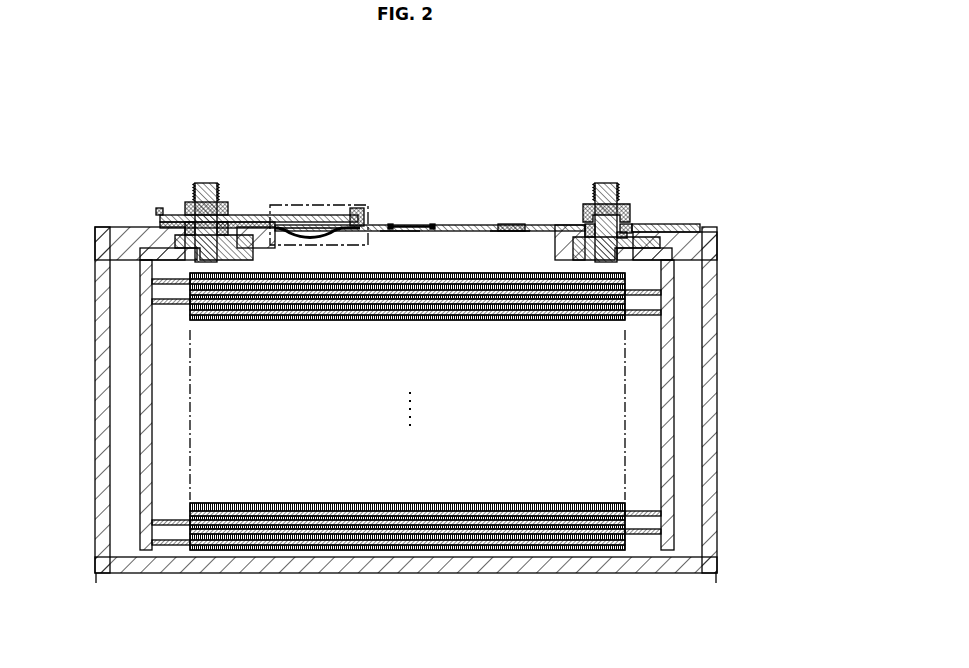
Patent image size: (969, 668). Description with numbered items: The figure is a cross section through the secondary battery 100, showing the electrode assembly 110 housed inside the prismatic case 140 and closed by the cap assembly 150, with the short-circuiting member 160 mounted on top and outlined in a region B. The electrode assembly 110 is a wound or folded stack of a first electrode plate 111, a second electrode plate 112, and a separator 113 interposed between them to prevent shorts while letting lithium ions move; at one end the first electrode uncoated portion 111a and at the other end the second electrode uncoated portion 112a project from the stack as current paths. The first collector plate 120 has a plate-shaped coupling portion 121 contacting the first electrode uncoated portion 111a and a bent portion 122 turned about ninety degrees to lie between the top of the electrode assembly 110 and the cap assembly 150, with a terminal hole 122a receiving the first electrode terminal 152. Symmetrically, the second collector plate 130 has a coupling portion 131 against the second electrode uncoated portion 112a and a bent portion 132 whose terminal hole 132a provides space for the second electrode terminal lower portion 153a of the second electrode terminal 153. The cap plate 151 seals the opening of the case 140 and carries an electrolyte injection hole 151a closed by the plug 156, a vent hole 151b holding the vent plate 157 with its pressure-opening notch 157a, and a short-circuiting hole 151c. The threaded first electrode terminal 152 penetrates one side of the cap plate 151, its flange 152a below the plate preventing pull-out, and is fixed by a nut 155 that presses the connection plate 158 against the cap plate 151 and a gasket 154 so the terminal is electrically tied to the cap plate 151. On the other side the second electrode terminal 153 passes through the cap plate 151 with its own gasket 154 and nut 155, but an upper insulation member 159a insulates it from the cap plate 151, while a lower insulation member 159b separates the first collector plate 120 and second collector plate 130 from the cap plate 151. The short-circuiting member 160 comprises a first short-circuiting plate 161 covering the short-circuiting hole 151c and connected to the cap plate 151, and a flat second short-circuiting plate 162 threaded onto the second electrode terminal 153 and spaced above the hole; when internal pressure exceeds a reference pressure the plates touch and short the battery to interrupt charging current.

The secondary battery 100 is at (682, 111).
The electrode assembly 110 is at (490, 562).
The first electrode plate 111 is at (556, 550).
The first electrode uncoated portion 111a is at (642, 535).
The second electrode plate 112 is at (292, 550).
The second electrode uncoated portion 112a is at (172, 546).
The separator 113 is at (425, 548).
The first collector plate 120 is at (678, 352).
The coupling portion 121 is at (668, 412).
The bent portion 122 is at (660, 250).
The terminal hole 122a is at (645, 258).
The second collector plate 130 is at (139, 352).
The coupling portion 131 is at (146, 432).
The bent portion 132 is at (158, 252).
The terminal hole 132a is at (166, 258).
The case 140 is at (710, 311).
The cap assembly 150 is at (476, 149).
The cap plate 151 is at (470, 225).
The electrolyte injection hole 151a is at (503, 232).
The vent hole 151b is at (400, 232).
The short-circuiting hole 151c is at (345, 233).
The first electrode terminal 152 is at (606, 183).
The flange 152a is at (578, 240).
The second electrode terminal 153 is at (205, 183).
The second electrode terminal lower portion 153a is at (245, 240).
The gasket 154 is at (190, 230).
The nut 155 is at (222, 203).
The plug 156 is at (510, 225).
The vent plate 157 is at (430, 225).
The notch 157a is at (397, 225).
The connection plate 158 is at (635, 224).
The upper insulation member 159a is at (358, 212).
The lower insulation member 159b is at (112, 240).
The short-circuiting member 160 is at (336, 203).
The first short-circuiting plate 161 is at (290, 228).
The second short-circuiting plate 162 is at (258, 215).
The short circuit region B is at (285, 205).